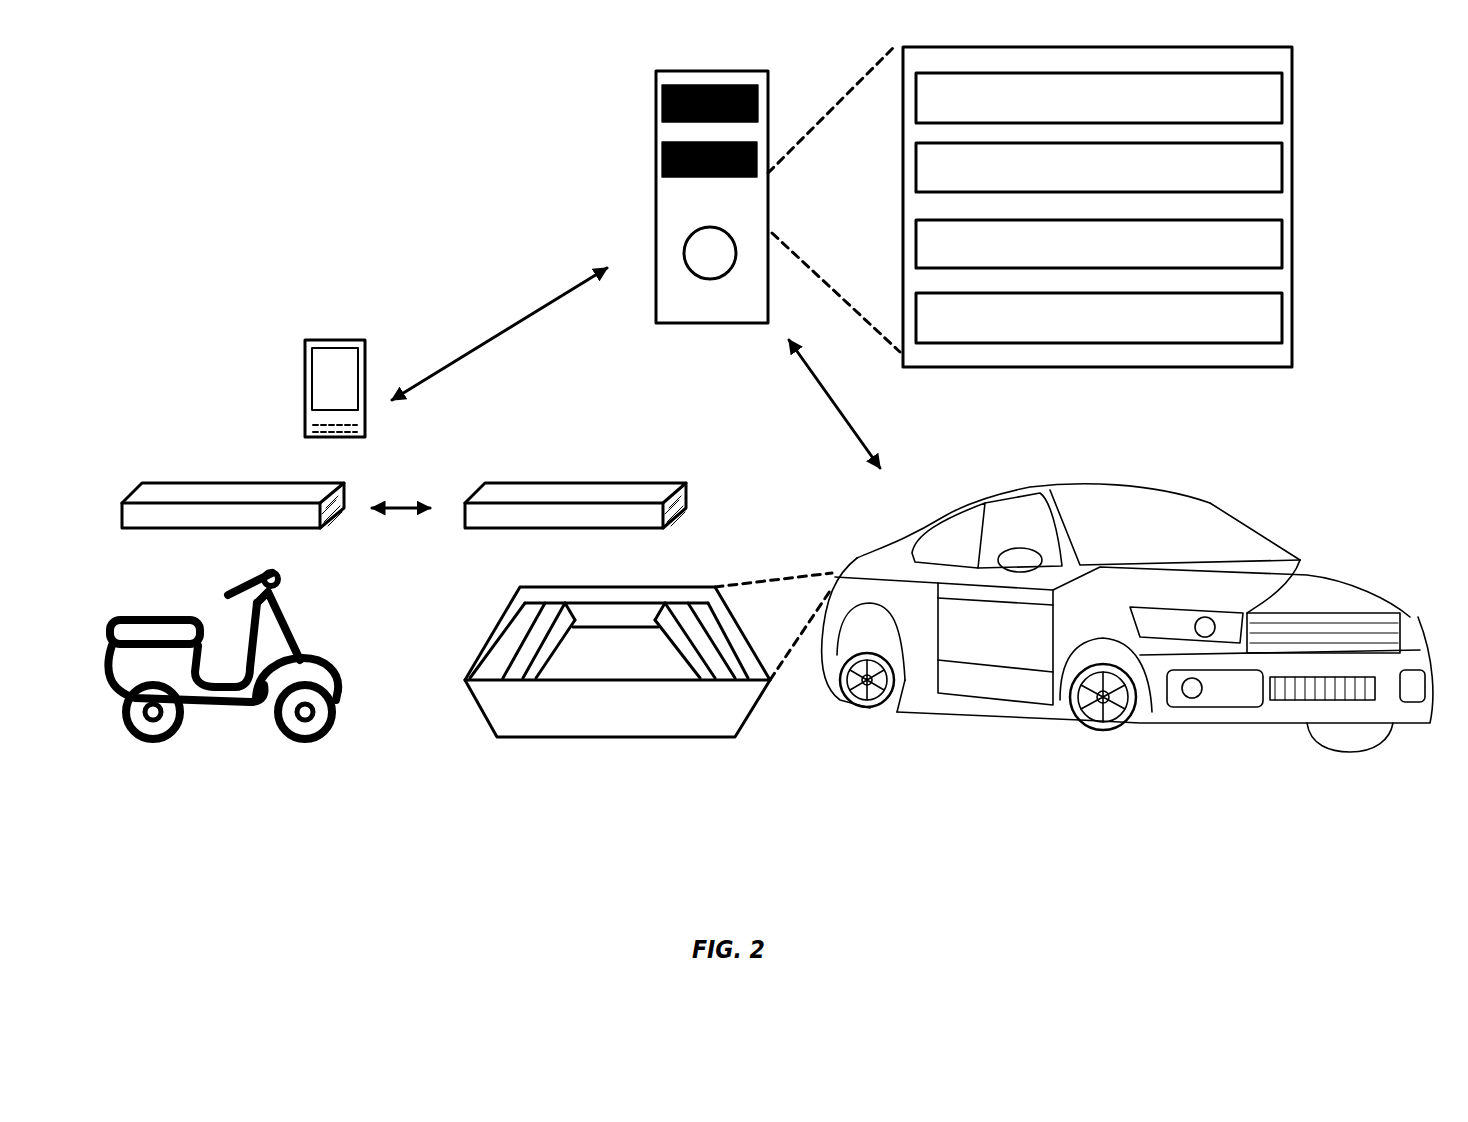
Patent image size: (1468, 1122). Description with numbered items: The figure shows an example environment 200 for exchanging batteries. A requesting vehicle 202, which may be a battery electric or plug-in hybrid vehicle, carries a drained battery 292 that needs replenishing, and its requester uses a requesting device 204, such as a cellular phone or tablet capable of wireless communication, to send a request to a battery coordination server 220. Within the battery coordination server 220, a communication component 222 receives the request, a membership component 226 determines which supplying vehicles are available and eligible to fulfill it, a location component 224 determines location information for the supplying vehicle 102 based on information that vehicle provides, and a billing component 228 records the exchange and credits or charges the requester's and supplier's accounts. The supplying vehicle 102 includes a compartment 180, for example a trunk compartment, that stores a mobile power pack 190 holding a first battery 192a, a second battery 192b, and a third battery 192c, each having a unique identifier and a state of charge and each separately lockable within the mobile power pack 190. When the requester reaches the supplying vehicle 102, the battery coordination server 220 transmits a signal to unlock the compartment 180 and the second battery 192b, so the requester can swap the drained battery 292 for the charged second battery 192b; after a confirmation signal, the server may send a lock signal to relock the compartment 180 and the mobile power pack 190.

The environment for a battery exchange 200 is at (172, 122).
The battery coordination server 220 is at (655, 132).
The communication component 222 is at (1099, 98).
The location component 224 is at (1099, 167).
The membership component 226 is at (1099, 244).
The billing component 228 is at (1099, 318).
The requesting device 204 is at (322, 338).
The drained battery 292 is at (237, 482).
The second battery 192b is at (650, 482).
The requesting vehicle 202 is at (187, 620).
The mobile power pack 190 is at (639, 697).
The first battery 192a is at (548, 663).
The third battery 192c is at (682, 663).
The supplying vehicle 102 is at (1040, 483).
The compartment 180 is at (857, 560).